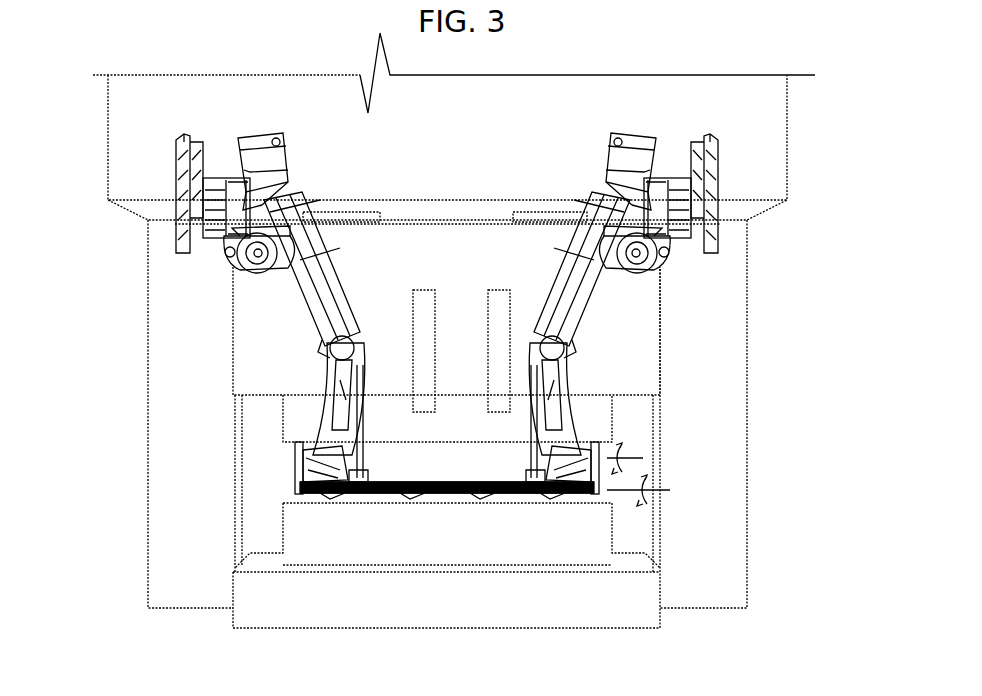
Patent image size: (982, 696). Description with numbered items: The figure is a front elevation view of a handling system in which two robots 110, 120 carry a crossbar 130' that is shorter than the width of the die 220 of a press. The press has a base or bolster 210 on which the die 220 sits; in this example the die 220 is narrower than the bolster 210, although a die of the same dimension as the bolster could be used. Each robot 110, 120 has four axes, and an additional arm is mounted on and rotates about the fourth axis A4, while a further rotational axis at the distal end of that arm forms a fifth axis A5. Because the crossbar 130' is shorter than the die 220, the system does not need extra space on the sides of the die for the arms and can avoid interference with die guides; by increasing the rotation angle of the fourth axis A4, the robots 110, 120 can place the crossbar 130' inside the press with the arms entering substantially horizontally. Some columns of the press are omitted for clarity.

The robot 110 is at (282, 285).
The robot 120 is at (657, 250).
The crossbar 130' is at (568, 534).
The die 220 is at (308, 533).
The bolster 210 is at (272, 598).
The fourth axis A4 is at (634, 447).
The fifth axis A5 is at (654, 494).